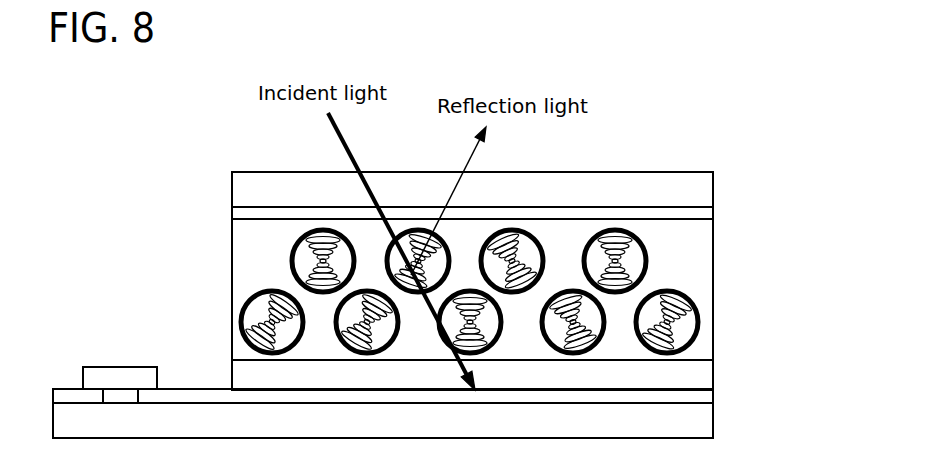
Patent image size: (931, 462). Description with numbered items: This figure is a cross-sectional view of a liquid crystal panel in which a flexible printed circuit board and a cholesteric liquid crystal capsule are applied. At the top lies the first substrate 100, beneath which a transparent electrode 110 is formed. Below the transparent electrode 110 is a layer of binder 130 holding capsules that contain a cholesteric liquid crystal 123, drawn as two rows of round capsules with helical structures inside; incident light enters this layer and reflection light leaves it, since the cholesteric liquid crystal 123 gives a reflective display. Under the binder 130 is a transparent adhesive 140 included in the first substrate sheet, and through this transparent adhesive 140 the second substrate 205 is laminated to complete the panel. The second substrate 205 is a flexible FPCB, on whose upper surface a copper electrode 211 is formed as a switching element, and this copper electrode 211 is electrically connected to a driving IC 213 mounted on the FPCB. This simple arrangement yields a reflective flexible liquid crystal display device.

The first substrate 100 is at (693, 186).
The transparent electrode 110 is at (700, 218).
The cholesteric liquid crystal 123 is at (286, 247).
The binder 130 is at (700, 272).
The transparent adhesive 140 is at (708, 374).
The copper electrode 211 is at (707, 399).
The second substrate 205 is at (707, 429).
The driving IC 213 is at (103, 367).